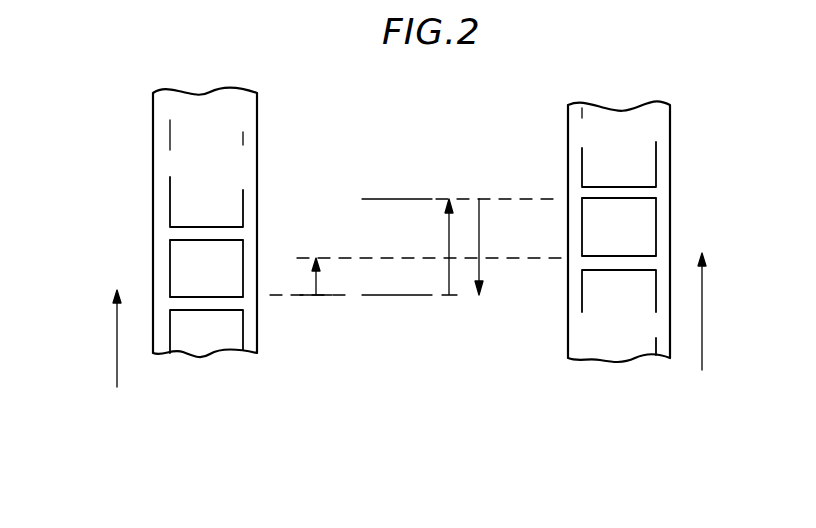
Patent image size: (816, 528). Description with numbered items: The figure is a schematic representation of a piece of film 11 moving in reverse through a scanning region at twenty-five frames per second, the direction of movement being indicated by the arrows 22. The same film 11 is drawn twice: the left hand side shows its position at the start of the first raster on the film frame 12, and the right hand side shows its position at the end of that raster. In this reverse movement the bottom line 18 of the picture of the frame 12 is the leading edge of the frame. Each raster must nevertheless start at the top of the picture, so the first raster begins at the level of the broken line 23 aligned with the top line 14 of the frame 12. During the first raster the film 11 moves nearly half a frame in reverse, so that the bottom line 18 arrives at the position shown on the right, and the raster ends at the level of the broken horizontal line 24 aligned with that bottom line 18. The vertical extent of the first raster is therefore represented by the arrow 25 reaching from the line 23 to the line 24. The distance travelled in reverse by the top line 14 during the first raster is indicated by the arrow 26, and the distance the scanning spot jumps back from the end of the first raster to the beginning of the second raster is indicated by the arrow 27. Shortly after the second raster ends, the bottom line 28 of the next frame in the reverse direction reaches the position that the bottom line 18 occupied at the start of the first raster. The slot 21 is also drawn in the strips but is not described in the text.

The film 11 is at (153, 108).
The film frame 12 is at (185, 268).
The top line 14 is at (226, 296).
The bottom line 18 is at (190, 241).
The upper slot 21 is at (202, 227).
The arrows 22 is at (116, 337).
The broken line 23 is at (392, 297).
The broken horizontal line 24 is at (404, 198).
The arrow 25 is at (449, 238).
The arrow 26 is at (318, 278).
The arrow 27 is at (483, 222).
The bottom line of the next frame 28 is at (192, 310).